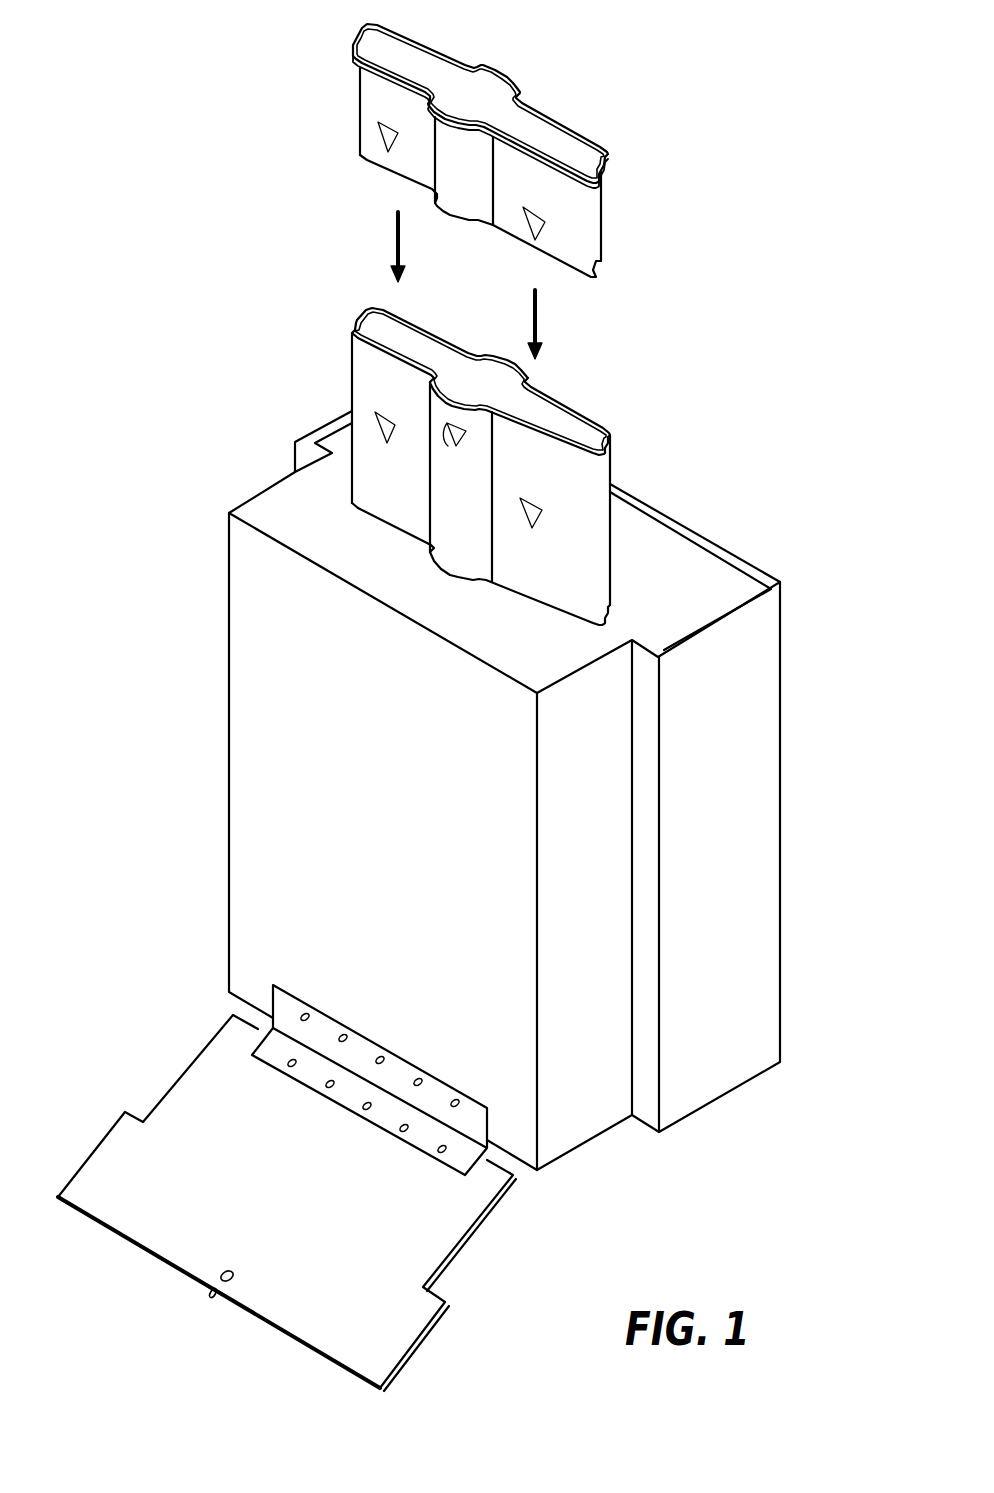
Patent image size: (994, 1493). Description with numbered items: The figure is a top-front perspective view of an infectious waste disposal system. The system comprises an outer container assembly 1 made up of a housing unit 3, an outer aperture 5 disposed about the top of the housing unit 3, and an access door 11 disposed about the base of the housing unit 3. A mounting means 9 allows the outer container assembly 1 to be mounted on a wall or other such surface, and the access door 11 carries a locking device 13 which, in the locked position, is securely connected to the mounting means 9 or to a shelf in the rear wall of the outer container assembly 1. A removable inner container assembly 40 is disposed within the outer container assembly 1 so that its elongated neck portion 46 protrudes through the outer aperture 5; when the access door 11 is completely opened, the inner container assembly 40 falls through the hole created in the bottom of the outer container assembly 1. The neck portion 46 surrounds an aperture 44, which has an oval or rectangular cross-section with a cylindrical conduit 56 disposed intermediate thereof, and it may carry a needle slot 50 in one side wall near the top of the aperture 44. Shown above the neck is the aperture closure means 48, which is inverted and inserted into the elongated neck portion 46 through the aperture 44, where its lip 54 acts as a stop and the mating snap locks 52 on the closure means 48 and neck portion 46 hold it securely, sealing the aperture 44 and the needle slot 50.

The outer container assembly 1 is at (586, 1149).
The housing unit 3 is at (385, 842).
The outer aperture 5 is at (497, 588).
The means for mounting 9 is at (542, 790).
The access door 11 is at (287, 1203).
The locking device 13 is at (222, 1270).
The inner container assembly 40 is at (596, 346).
The aperture 44 is at (511, 457).
The elongated neck portion 46 is at (607, 480).
The aperture closure means 48 is at (475, 147).
The needle slot 50 is at (443, 432).
The snap locks 52 is at (380, 135).
The lip 54 is at (358, 38).
The cylindrical conduit 56 is at (500, 358).